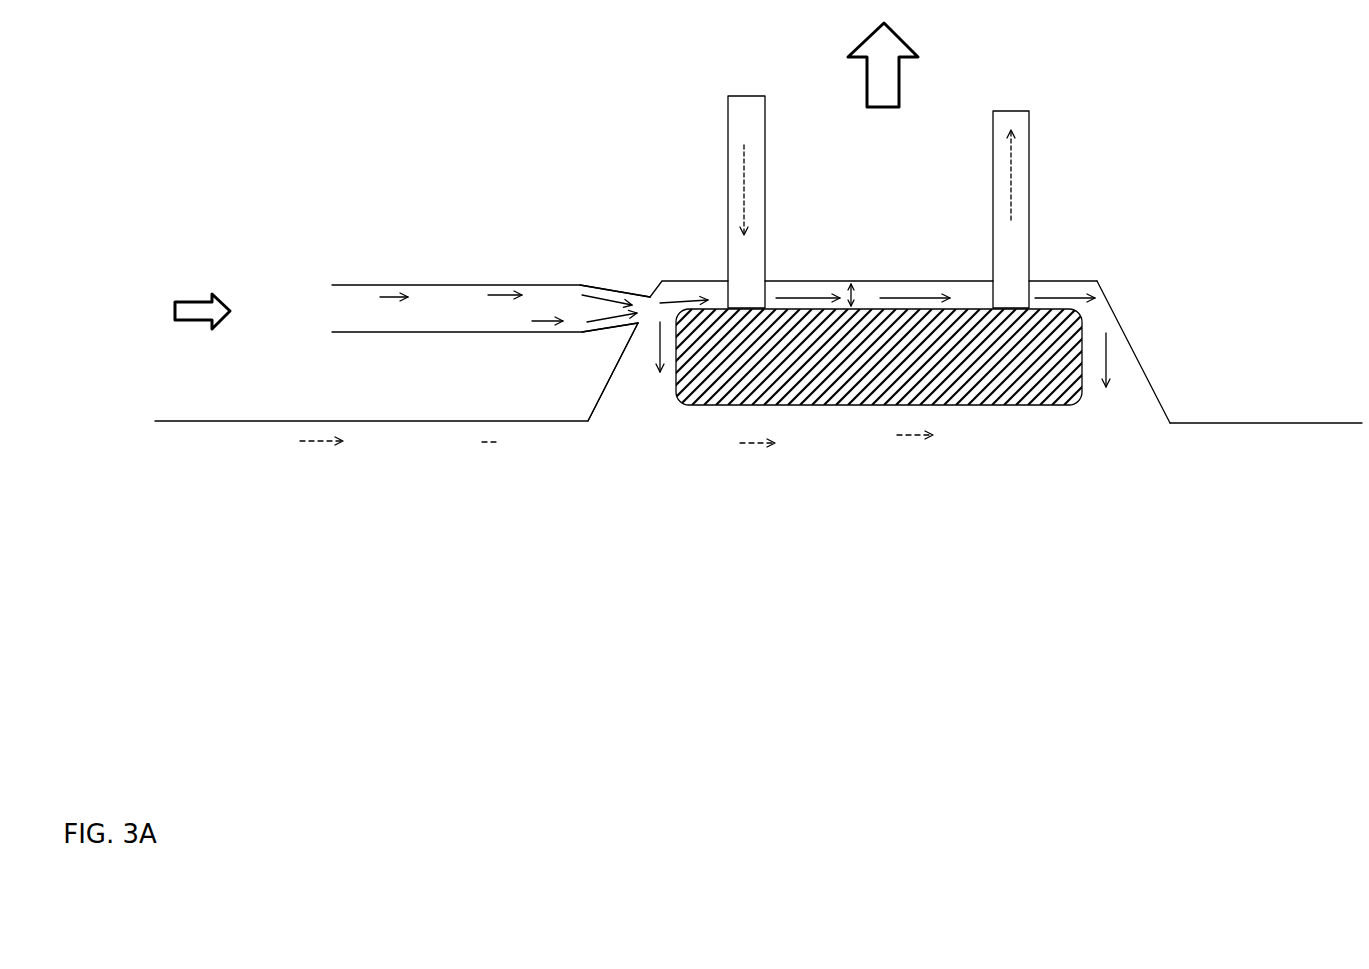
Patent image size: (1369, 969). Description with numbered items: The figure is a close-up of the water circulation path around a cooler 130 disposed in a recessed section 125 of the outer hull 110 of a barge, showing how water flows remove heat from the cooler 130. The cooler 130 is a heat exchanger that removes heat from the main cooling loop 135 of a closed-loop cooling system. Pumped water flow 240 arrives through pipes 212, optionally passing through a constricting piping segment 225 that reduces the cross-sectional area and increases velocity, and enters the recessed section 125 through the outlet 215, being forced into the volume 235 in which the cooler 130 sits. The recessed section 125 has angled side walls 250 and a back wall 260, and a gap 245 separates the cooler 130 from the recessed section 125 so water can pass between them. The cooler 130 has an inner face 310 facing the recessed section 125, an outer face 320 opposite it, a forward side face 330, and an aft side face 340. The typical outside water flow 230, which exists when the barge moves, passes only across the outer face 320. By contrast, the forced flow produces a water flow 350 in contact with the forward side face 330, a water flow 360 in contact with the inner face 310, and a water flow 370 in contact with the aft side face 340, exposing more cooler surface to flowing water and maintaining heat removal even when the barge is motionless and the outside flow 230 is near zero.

The outer hull 110 is at (280, 421).
The pipes 212 is at (428, 285).
The water flow 240 is at (457, 313).
The water flow outside the outer hull 230 is at (515, 442).
The constricting piping segment 225 is at (622, 296).
The outlet 215 is at (648, 310).
The water flow 350 is at (648, 360).
The forward side face 330 is at (678, 398).
The cooler 130 is at (740, 404).
The outer face 320 is at (840, 404).
The back wall 260 is at (797, 283).
The gap 245 is at (852, 298).
The water flow 360 is at (928, 296).
The inner face 310 is at (984, 308).
The main cooling loop 135 is at (1030, 160).
The recessed section 125 is at (1086, 283).
The side walls 250 is at (1113, 310).
The volume 235 is at (1103, 317).
The water flow 370 is at (1105, 360).
The aft side face 340 is at (1083, 375).